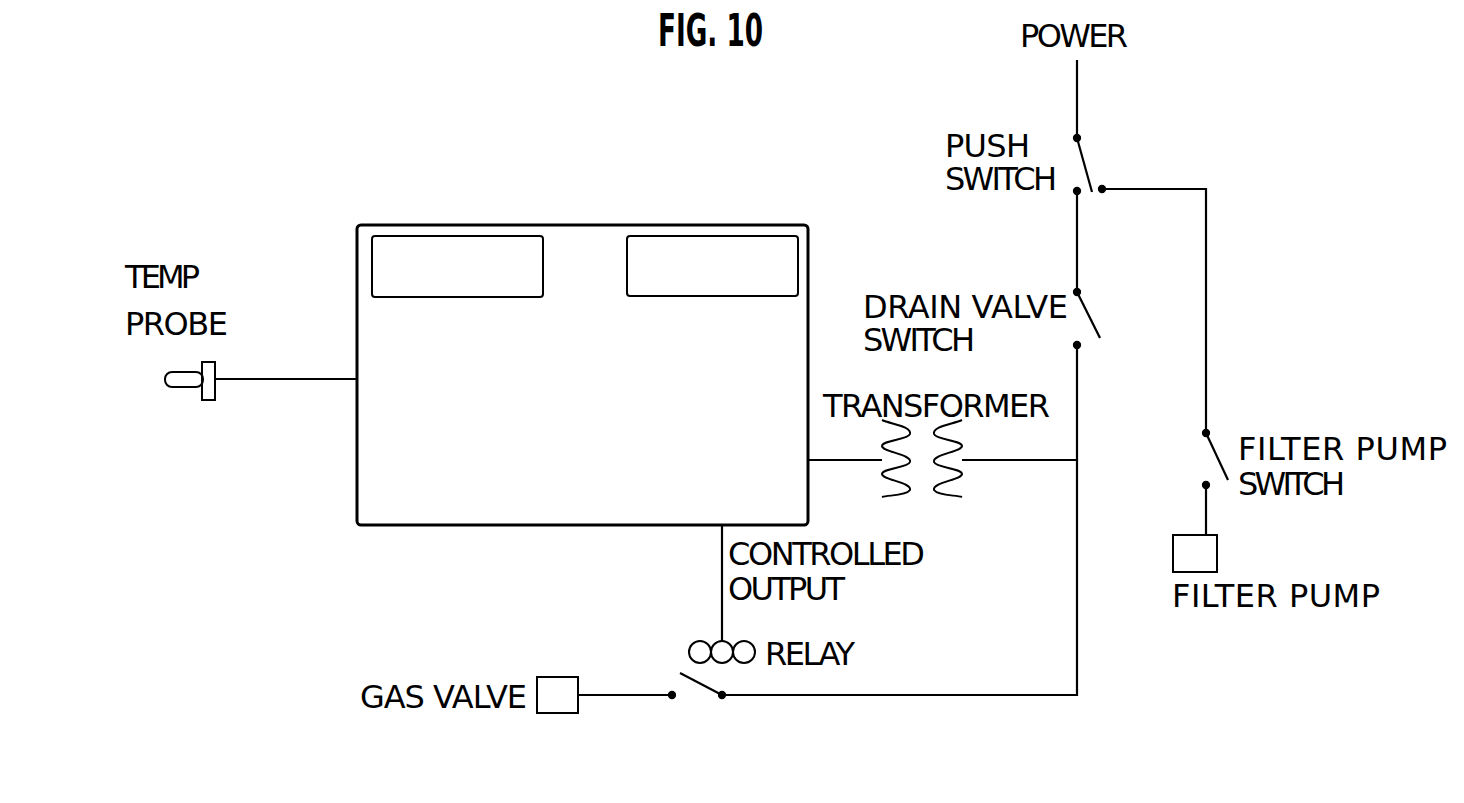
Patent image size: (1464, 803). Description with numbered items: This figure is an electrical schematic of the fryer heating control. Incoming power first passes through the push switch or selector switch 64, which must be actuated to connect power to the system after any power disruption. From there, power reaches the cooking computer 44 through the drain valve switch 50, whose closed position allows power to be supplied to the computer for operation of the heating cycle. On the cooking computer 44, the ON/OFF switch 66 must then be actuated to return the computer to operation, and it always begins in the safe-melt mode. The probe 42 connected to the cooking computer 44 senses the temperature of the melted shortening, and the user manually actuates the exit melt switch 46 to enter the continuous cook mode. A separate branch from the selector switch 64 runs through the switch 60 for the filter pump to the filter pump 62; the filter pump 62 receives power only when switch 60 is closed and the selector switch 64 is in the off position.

The probe 42 is at (184, 388).
The cooking computer 44 is at (588, 248).
The exit melt switch 46 is at (712, 248).
The drain valve switch 50 is at (1088, 312).
The switch for the filter pump 60 is at (1216, 456).
The filter pump 62 is at (1217, 556).
The push switch or selector switch 64 is at (1088, 160).
The ON/OFF switch 66 is at (469, 248).